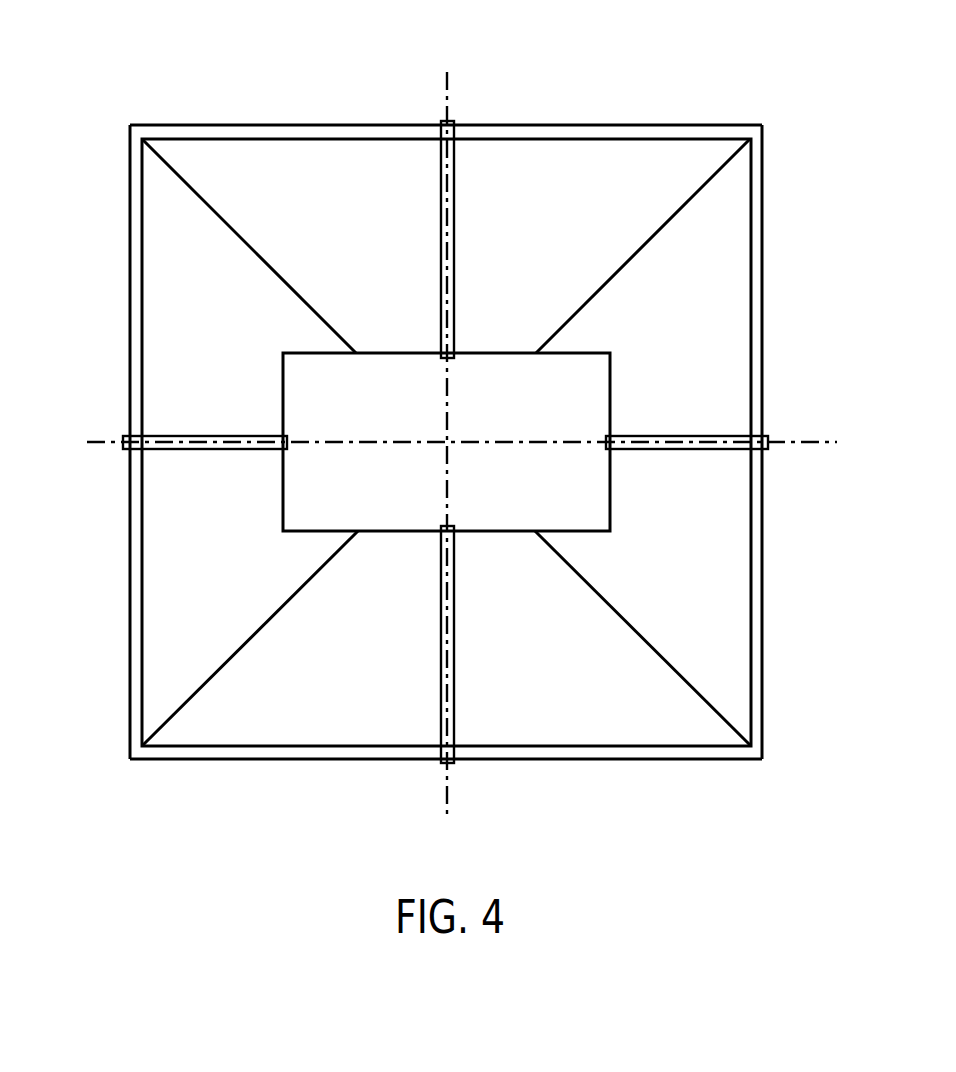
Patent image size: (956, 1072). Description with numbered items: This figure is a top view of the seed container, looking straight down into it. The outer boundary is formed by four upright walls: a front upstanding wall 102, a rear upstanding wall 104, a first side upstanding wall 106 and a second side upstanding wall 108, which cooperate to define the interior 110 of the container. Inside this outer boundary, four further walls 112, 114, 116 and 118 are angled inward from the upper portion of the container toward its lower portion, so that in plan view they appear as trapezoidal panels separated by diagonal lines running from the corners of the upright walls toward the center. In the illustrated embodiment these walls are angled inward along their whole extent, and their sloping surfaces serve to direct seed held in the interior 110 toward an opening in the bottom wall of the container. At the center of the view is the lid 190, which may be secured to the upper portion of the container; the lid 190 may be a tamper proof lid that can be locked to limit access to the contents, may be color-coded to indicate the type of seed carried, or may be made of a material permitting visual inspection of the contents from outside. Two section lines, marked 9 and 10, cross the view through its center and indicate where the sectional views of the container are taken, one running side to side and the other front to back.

The front upstanding wall 102 is at (104, 476).
The rear upstanding wall 104 is at (773, 298).
The first side upstanding wall 106 is at (562, 780).
The second side upstanding wall 108 is at (583, 90).
The interior 110 is at (678, 170).
The angled wall 112 is at (226, 550).
The angled wall 114 is at (701, 547).
The angled wall 116 is at (509, 650).
The angled wall 118 is at (509, 231).
The lid 190 is at (618, 352).
The section line 9- 9 is at (87, 442).
The section line 10- 10 is at (447, 72).